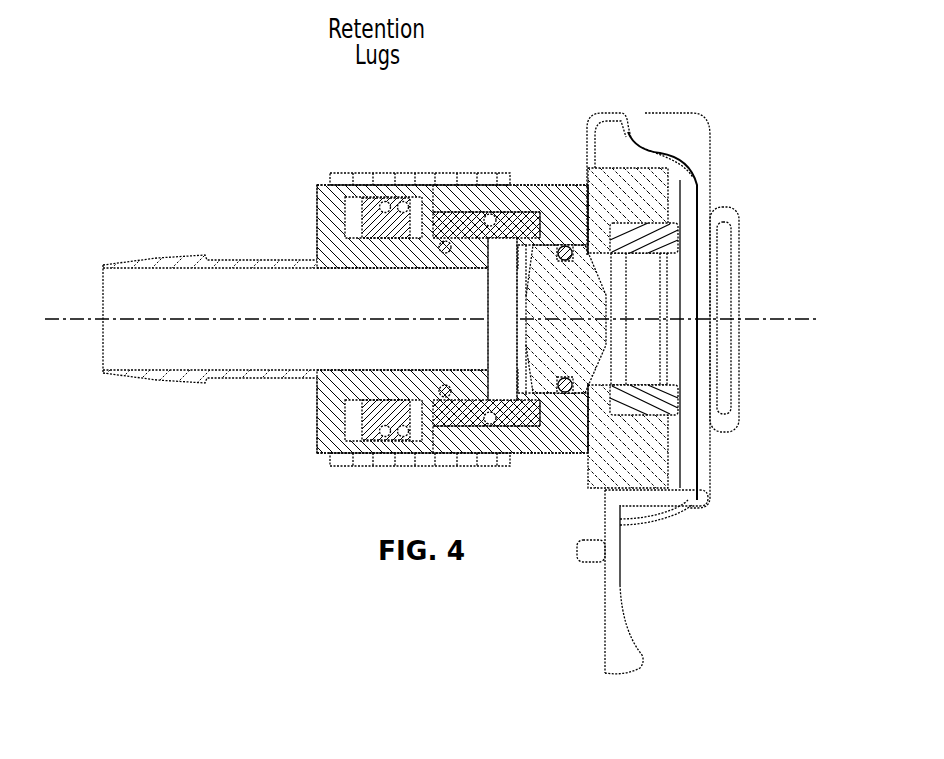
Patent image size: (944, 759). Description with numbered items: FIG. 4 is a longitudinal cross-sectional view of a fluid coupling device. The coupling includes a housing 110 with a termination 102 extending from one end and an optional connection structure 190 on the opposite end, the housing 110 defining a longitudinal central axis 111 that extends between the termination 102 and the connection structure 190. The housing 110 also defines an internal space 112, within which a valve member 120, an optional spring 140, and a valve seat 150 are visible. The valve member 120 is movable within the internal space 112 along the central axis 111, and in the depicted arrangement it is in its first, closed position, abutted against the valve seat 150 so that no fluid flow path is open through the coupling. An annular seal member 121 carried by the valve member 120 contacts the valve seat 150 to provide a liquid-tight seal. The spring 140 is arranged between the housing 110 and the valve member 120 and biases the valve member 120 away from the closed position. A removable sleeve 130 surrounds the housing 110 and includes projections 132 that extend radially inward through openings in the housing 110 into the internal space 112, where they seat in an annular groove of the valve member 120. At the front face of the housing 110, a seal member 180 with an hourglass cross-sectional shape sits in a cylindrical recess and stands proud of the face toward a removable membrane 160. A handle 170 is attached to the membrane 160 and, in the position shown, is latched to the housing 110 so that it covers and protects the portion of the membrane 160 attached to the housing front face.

The termination 102 is at (168, 257).
The housing 110 is at (513, 185).
The longitudinal central axis 111 is at (769, 318).
The internal space 112 is at (415, 307).
The valve member 120 is at (523, 332).
The annular seal member 121 is at (565, 246).
The sleeve 130 is at (344, 173).
The projections 132 is at (426, 220).
The spring 140 is at (380, 466).
The valve seat 150 is at (531, 400).
The membrane 160 is at (628, 132).
The handle 170 is at (620, 585).
The seal member 180 is at (622, 415).
The connection structure 190 is at (700, 106).